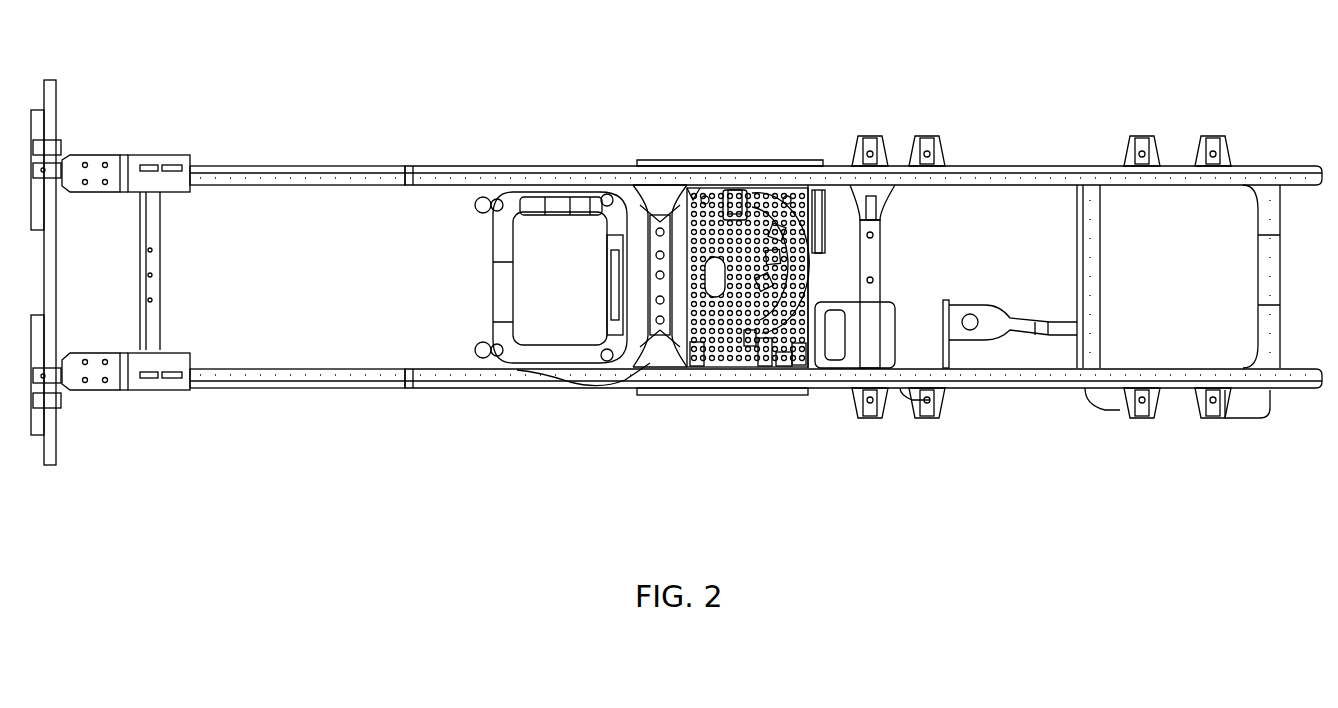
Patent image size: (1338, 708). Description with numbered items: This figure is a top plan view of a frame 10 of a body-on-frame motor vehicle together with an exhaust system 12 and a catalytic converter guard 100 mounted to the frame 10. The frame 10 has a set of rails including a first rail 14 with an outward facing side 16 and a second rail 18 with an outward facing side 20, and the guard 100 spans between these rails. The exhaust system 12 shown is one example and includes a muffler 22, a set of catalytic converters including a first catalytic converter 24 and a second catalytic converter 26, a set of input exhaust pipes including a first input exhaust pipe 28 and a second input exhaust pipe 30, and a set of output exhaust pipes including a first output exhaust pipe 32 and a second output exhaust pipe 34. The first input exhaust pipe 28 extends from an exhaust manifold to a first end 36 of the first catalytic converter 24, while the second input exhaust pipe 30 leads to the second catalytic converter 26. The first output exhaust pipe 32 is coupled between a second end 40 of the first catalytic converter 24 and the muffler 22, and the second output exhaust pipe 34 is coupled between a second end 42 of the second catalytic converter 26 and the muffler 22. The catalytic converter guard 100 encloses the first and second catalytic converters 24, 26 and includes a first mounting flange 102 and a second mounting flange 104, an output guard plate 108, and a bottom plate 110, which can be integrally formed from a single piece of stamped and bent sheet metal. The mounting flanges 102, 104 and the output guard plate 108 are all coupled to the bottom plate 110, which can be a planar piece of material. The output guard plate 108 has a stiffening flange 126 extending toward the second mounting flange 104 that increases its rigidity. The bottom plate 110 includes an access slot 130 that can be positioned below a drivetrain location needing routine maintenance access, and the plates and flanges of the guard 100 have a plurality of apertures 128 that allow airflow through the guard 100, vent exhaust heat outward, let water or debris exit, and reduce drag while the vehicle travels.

The frame 10 is at (345, 141).
The exhaust system 12 is at (470, 292).
The first rail 14 is at (393, 378).
The outward facing side 16 is at (430, 388).
The second rail 18 is at (373, 173).
The outward facing side 20 is at (455, 168).
The muffler 22 is at (928, 313).
The first catalytic converter 24 is at (728, 358).
The second catalytic converter 26 is at (705, 197).
The first input exhaust pipe 28 is at (615, 353).
The second input exhaust pipe 30 is at (500, 255).
The first output exhaust pipe 32 is at (807, 360).
The second output exhaust pipe 34 is at (765, 313).
The first end 36 is at (698, 355).
The second end 40 is at (768, 355).
The second end 42 is at (735, 197).
The catalytic converter guard 100 is at (650, 398).
The first mounting flange 102 is at (712, 395).
The second mounting flange 104 is at (768, 160).
The output guard plate 108 is at (808, 262).
The bottom plate 110 is at (803, 210).
The stiffening flange 126 is at (827, 230).
The apertures 128 is at (787, 197).
The access slot 130 is at (690, 197).